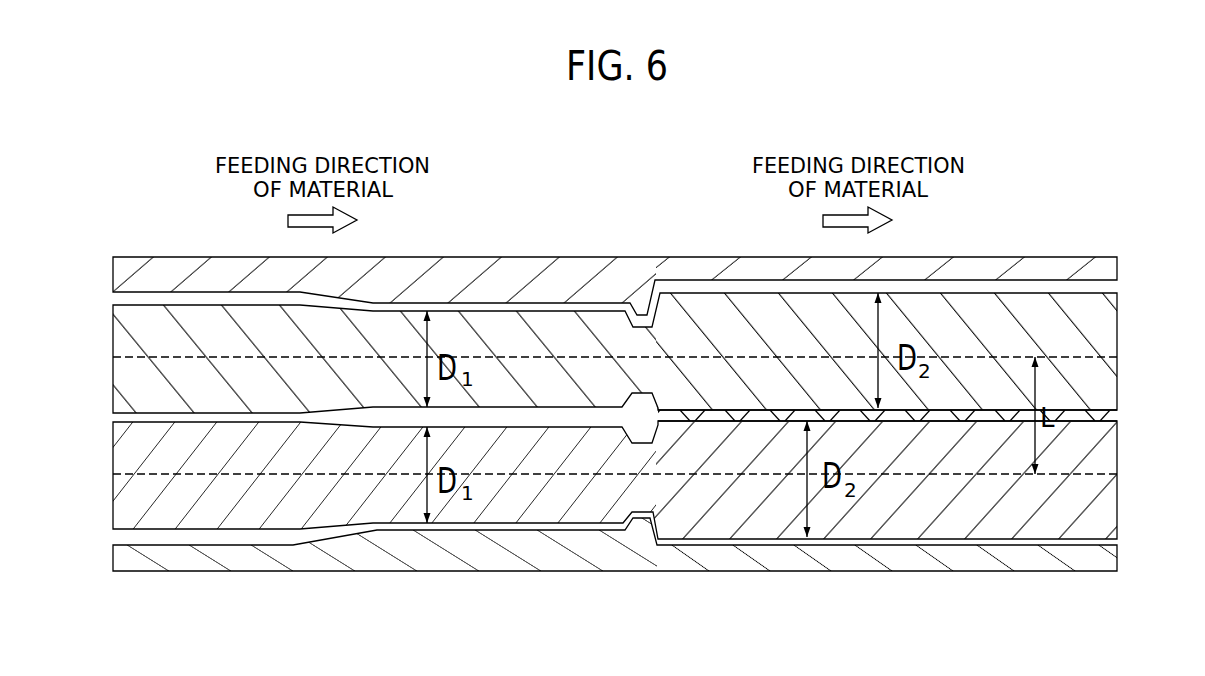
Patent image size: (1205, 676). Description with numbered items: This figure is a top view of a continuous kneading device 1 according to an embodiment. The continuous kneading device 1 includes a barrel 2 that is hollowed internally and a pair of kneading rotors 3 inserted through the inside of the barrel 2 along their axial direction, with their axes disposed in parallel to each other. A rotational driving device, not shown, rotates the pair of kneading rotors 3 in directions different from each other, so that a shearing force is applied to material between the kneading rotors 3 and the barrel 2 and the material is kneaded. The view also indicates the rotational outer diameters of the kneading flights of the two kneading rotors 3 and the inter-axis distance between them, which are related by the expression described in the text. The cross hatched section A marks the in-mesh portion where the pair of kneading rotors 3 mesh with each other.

The continuous kneading device 1 is at (1029, 107).
The barrel 2 is at (985, 267).
The kneading rotors 3 is at (90, 528).
The cross hatched section A is at (1102, 416).